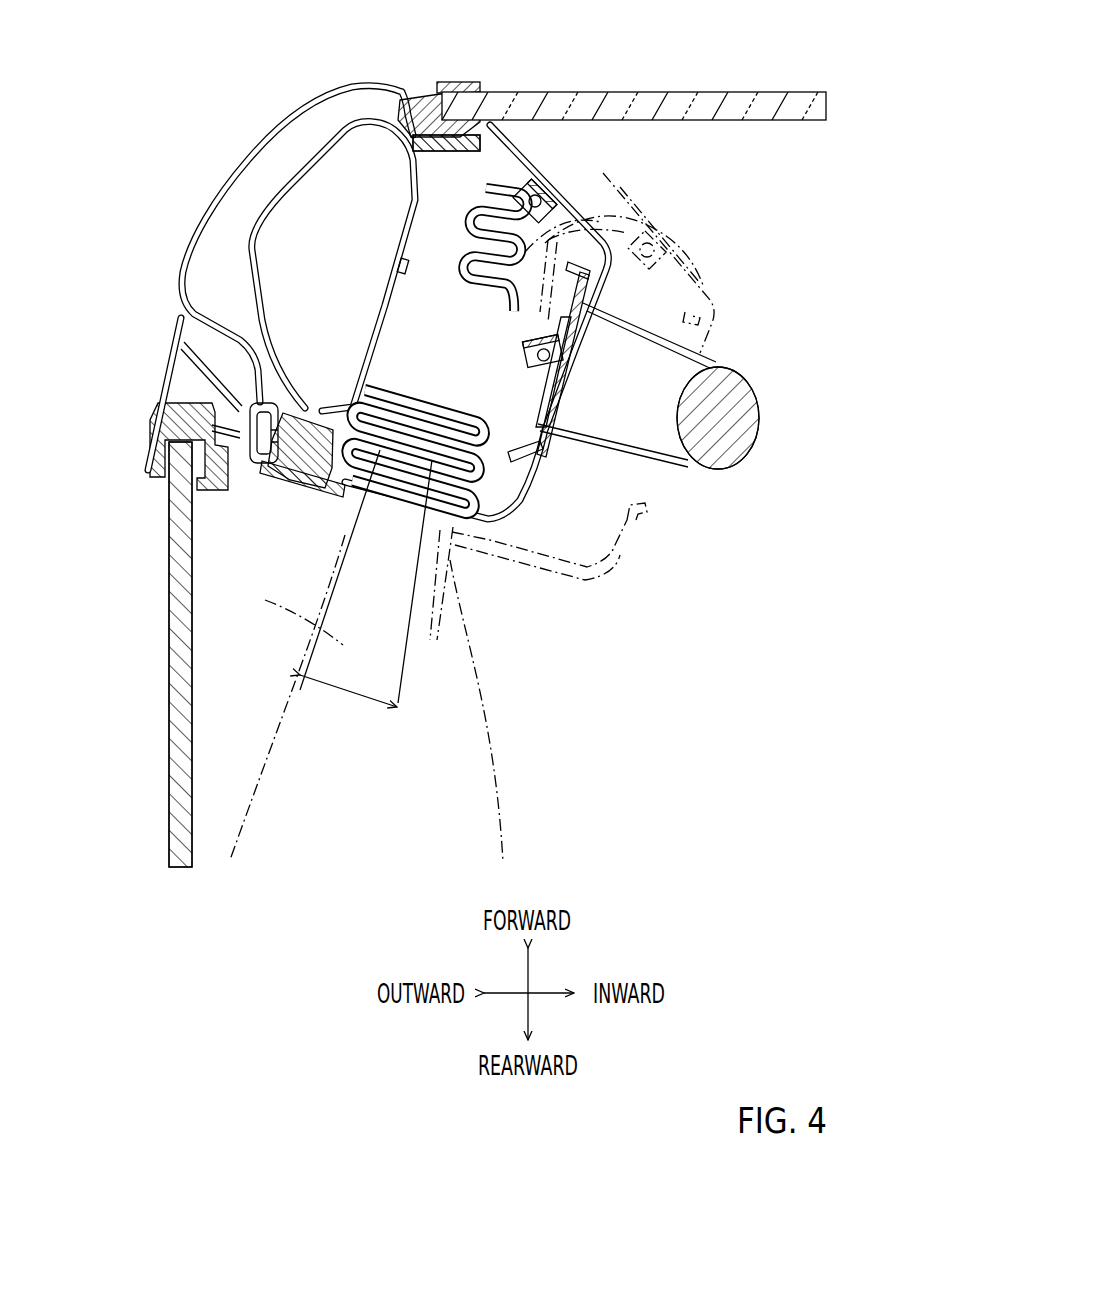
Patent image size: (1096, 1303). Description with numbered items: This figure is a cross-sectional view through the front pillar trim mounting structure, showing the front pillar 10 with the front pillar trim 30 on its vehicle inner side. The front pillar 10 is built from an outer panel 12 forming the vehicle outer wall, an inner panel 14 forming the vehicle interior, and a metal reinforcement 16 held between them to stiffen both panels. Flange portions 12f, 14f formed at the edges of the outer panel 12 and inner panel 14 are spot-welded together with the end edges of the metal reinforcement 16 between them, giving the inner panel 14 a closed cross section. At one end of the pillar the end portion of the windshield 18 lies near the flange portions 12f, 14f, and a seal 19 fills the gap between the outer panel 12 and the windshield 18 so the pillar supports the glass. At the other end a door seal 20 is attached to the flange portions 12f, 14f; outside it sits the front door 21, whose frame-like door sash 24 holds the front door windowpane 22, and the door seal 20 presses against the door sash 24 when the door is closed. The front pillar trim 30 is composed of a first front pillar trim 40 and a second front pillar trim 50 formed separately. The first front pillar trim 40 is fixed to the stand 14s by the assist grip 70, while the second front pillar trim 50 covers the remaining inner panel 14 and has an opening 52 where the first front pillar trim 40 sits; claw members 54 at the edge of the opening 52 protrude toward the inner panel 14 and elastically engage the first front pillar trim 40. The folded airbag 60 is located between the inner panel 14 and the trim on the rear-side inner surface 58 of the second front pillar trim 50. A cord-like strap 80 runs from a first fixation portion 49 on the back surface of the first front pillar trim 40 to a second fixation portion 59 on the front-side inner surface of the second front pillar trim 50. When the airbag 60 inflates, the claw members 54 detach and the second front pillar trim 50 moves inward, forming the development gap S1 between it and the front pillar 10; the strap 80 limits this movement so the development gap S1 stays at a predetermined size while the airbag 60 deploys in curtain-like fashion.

The front pillar 10 is at (297, 242).
The outer panel 12 is at (293, 122).
The flange portion 12f is at (457, 135).
The inner panel 14 is at (430, 339).
The flange portion 14f is at (452, 150).
The stand 14s is at (403, 270).
The metal reinforcement 16 is at (287, 197).
The windshield 18 is at (620, 92).
The seal 19 is at (432, 93).
The door seal 20 is at (283, 487).
The front door 21 is at (142, 592).
The front door windowpane 22 is at (180, 548).
The door sash 24 is at (152, 450).
The front pillar trim 30 is at (622, 451).
The first front pillar trim 40 is at (661, 392).
The first fixation portion 49 is at (525, 348).
The second front pillar trim 50 is at (540, 525).
The opening 52 is at (587, 305).
The claw members 54 is at (713, 310).
The inner surface 58 is at (428, 460).
The second fixation portion 59 is at (553, 207).
The airbag 60 is at (366, 624).
The assist grip 70 is at (753, 443).
The strap 80 is at (643, 217).
The development gap S1 is at (348, 700).